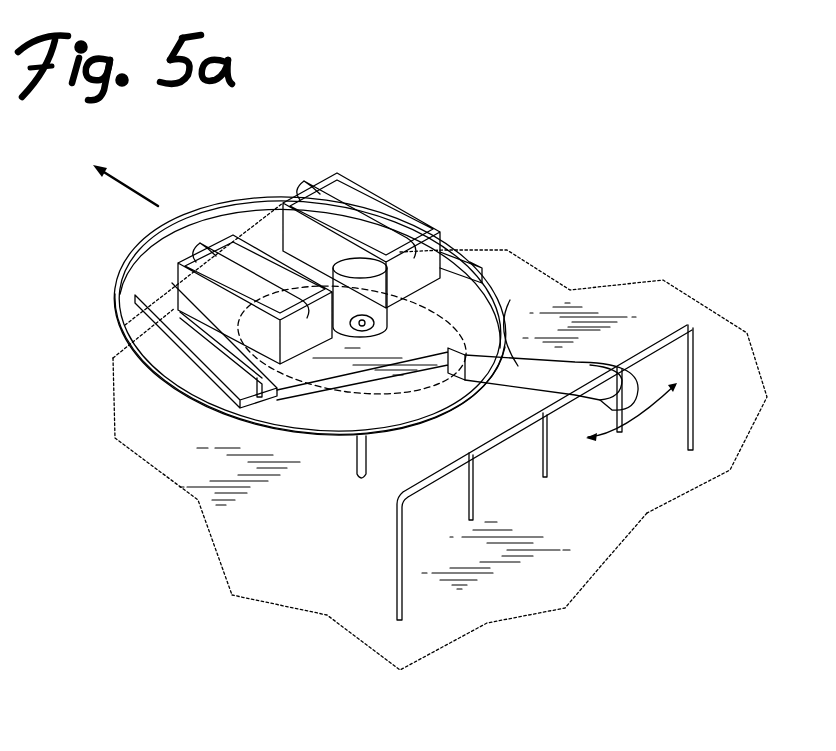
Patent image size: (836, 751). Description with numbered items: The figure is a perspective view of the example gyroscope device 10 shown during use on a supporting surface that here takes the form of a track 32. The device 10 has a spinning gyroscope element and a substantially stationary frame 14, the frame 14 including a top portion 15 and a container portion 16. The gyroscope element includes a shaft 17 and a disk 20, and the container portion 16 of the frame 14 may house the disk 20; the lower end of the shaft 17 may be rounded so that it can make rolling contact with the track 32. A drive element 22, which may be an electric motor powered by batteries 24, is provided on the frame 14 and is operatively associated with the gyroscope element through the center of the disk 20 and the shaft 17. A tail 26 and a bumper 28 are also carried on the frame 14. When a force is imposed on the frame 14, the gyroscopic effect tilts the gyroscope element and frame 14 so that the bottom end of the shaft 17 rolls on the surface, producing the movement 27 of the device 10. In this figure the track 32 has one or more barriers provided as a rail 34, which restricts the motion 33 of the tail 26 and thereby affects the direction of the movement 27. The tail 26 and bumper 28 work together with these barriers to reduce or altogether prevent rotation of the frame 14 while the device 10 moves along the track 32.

The gyroscope device 10 is at (533, 204).
The frame 14 is at (518, 272).
The top portion 15 is at (240, 362).
The container portion 16 is at (333, 438).
The shaft 17 is at (361, 480).
The disk 20 is at (457, 312).
The drive element 22 is at (342, 260).
The batteries 24 is at (205, 268).
The tail 26 is at (588, 362).
The movement 27 is at (140, 194).
The bumper 28 is at (115, 268).
The track 32 is at (643, 513).
The motion 33 is at (631, 422).
The rail 34 is at (690, 322).